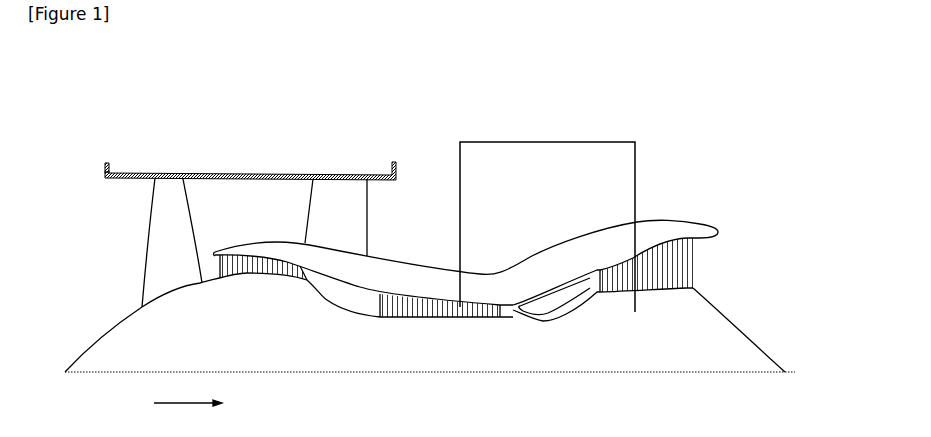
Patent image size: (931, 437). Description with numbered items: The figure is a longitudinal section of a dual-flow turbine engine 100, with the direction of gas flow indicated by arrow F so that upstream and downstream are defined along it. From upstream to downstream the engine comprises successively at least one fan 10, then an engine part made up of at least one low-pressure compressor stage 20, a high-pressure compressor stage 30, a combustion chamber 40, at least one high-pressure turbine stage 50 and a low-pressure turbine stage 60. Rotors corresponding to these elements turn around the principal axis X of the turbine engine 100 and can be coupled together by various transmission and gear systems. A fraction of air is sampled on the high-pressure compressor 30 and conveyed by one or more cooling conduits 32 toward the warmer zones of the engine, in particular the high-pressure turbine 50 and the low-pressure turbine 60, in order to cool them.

The dual-flow turbine engine 100 is at (121, 122).
The fan 10 is at (175, 168).
The low-pressure compressor stage 20 is at (243, 240).
The high-pressure compressor stage 30 is at (423, 290).
The cooling conduit 32 is at (546, 140).
The combustion chamber 40 is at (550, 290).
The high-pressure turbine stage 50 is at (611, 254).
The low-pressure turbine stage 60 is at (660, 214).